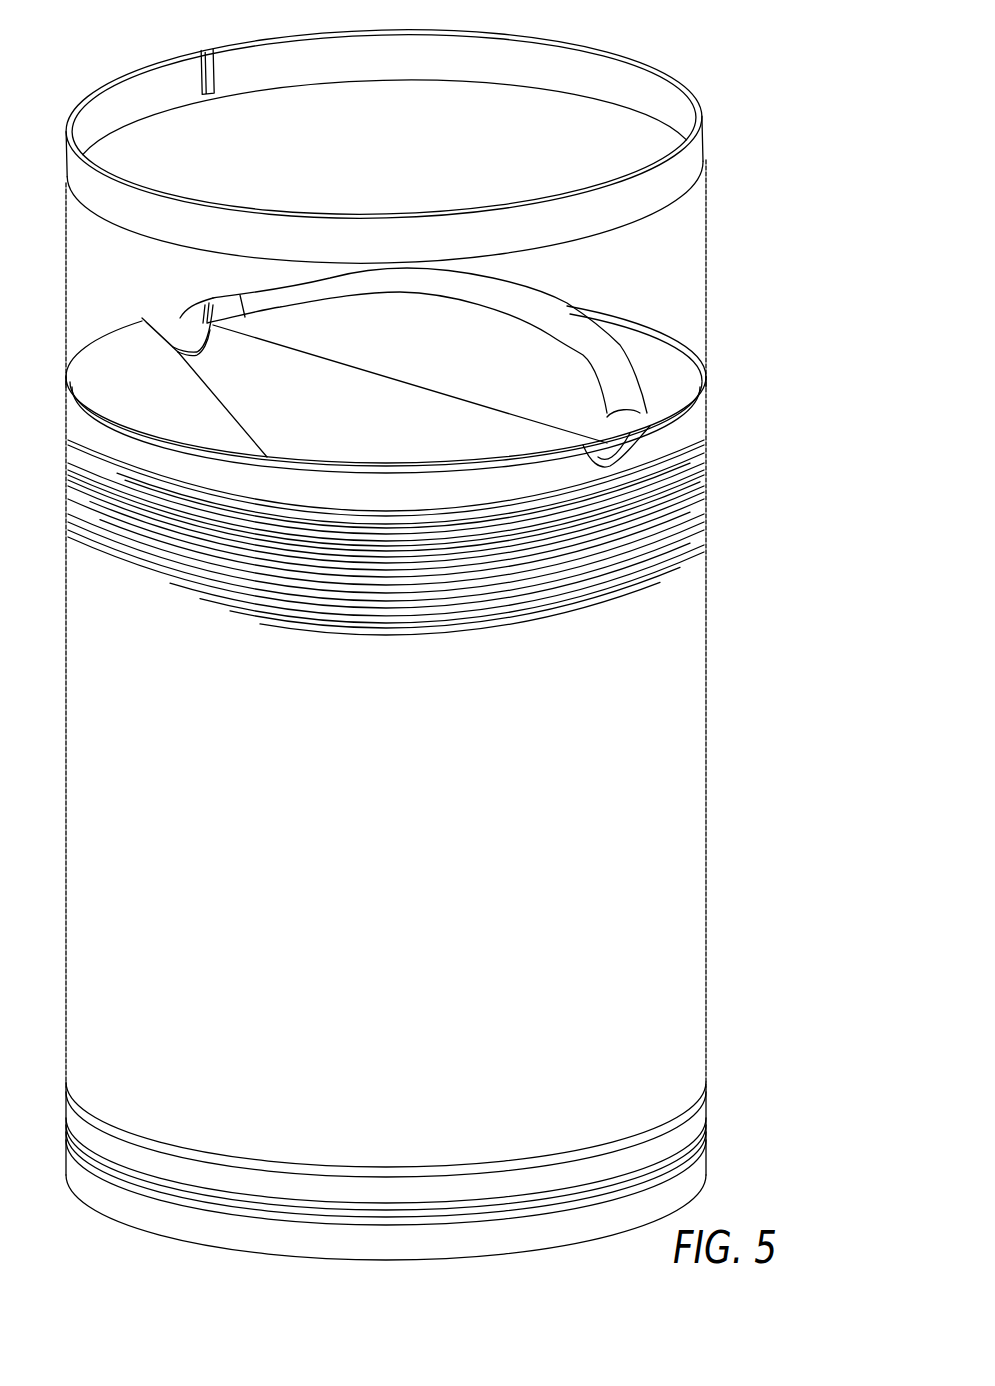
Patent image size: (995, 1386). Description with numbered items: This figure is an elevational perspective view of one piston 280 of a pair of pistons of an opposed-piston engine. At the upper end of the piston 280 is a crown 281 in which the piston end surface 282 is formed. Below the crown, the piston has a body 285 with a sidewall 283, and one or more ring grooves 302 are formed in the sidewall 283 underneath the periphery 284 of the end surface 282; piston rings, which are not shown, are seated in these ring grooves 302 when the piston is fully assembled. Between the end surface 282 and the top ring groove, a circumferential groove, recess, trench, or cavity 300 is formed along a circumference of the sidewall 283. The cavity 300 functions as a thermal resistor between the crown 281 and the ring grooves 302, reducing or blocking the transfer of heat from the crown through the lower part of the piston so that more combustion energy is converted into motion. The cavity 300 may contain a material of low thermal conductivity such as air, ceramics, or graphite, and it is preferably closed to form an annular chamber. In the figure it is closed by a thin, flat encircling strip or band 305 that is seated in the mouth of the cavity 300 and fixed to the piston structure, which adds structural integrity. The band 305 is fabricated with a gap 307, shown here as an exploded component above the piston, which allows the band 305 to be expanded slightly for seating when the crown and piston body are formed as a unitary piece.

The piston 280 is at (427, 710).
The crown 281 is at (417, 348).
The piston end surface 282 is at (655, 355).
The sidewall 283 is at (677, 600).
The periphery 284 is at (694, 378).
The body 285 is at (652, 797).
The cavity 300 is at (425, 514).
The ring grooves 302 is at (677, 497).
The band 305 is at (704, 148).
The gap 307 is at (203, 46).